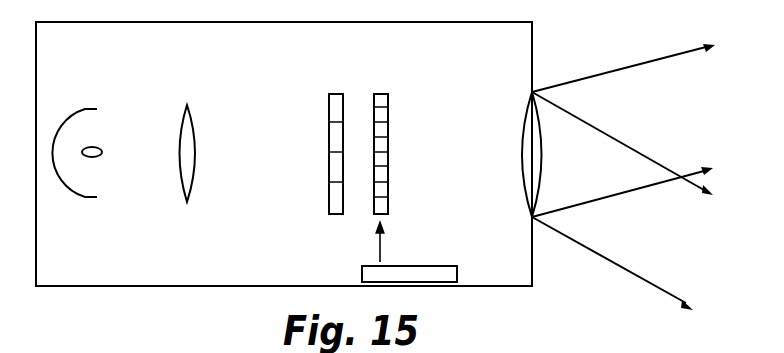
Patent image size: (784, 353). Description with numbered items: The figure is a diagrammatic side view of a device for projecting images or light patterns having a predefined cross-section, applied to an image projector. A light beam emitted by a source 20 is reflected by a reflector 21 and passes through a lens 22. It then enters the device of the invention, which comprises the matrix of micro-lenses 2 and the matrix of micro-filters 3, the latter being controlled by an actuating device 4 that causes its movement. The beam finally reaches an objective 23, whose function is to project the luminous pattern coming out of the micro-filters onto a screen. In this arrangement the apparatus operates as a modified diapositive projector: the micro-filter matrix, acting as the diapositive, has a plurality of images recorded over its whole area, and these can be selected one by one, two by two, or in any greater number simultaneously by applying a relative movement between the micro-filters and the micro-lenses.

The matrix of micro-lenses 2 is at (332, 135).
The matrix of micro-filters 3 is at (378, 125).
The actuating device 4 is at (408, 273).
The source 20 is at (95, 158).
The reflector 21 is at (86, 106).
The lens 22 is at (189, 127).
The objective 23 is at (517, 125).